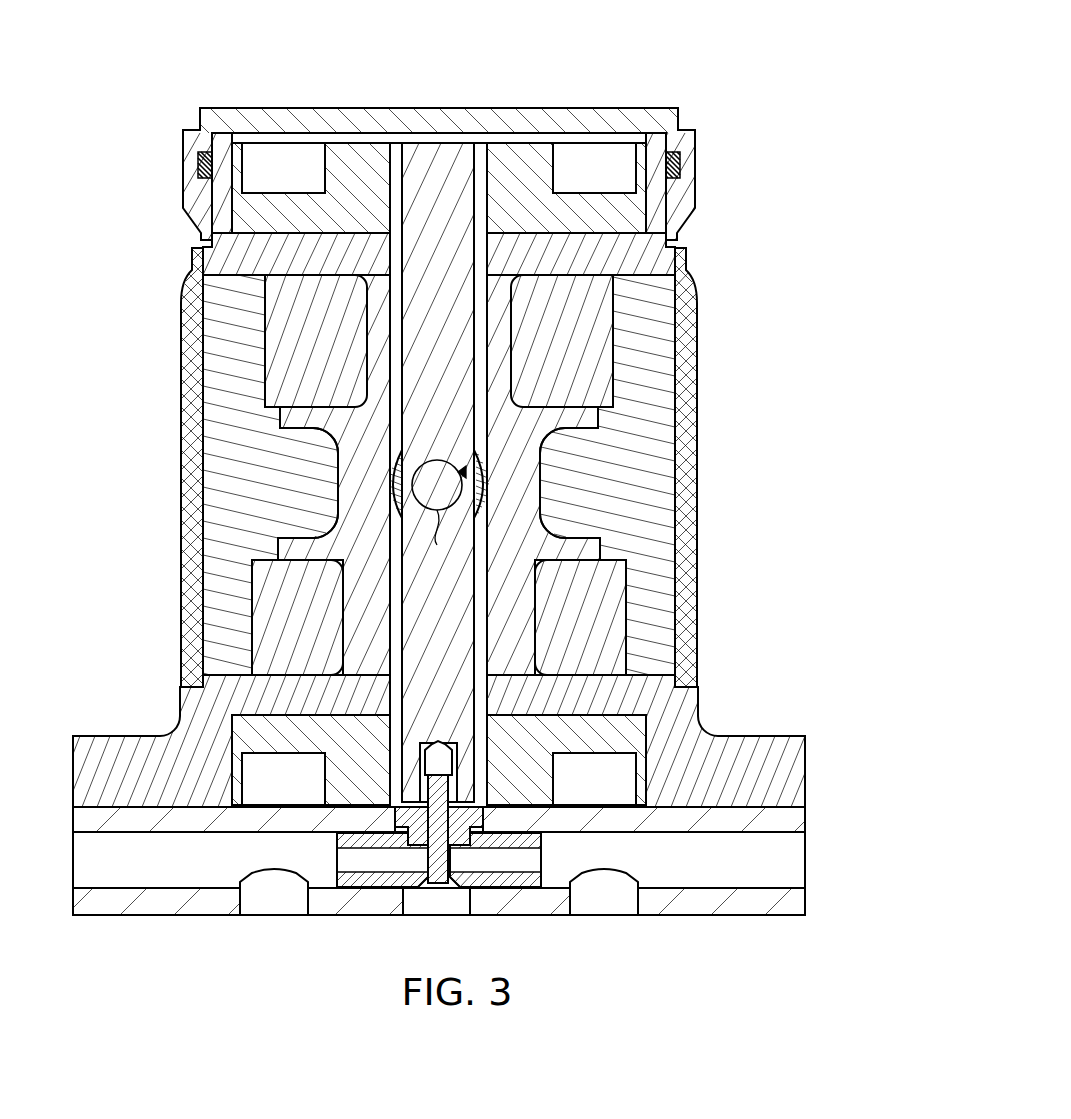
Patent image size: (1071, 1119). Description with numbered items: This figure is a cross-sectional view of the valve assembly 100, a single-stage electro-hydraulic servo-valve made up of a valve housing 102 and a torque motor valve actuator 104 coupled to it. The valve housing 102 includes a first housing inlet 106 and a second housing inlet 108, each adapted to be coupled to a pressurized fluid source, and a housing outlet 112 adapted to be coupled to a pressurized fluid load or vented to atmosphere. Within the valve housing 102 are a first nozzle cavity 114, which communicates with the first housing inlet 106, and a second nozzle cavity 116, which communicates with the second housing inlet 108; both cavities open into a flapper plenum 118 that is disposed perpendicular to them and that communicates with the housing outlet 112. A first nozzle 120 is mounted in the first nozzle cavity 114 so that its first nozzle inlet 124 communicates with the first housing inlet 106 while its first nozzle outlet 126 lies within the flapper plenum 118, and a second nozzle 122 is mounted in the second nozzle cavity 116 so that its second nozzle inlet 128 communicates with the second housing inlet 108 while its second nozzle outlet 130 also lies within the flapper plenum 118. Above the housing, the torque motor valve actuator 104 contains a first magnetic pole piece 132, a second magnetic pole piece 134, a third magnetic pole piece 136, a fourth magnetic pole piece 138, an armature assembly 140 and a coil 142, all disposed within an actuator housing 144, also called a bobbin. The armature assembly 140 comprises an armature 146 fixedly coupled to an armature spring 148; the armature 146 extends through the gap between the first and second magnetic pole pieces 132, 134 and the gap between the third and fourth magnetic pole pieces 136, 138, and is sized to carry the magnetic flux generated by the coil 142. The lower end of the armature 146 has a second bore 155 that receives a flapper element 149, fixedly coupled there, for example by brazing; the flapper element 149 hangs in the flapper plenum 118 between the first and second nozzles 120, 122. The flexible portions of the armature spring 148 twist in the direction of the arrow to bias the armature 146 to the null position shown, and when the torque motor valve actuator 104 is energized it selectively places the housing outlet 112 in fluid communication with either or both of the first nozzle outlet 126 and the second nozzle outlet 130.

The valve assembly 100 is at (740, 76).
The valve housing 102 is at (474, 819).
The torque motor valve actuator 104 is at (457, 457).
The first housing inlet 106 is at (273, 876).
The second housing inlet 108 is at (603, 876).
The housing outlet 112 is at (423, 908).
The first nozzle cavity 114 is at (170, 876).
The second nozzle cavity 116 is at (740, 876).
The flapper plenum 118 is at (450, 825).
The first nozzle 120 is at (337, 890).
The second nozzle 122 is at (542, 890).
The first nozzle inlet 124 is at (350, 862).
The first nozzle outlet 126 is at (425, 858).
The second nozzle inlet 128 is at (528, 862).
The second nozzle outlet 130 is at (452, 858).
The first magnetic pole piece 132 is at (240, 213).
The second magnetic pole piece 134 is at (635, 213).
The third magnetic pole piece 136 is at (248, 738).
The fourth magnetic pole piece 138 is at (630, 738).
The armature assembly 140 is at (439, 431).
The coil 142 is at (272, 385).
The actuator housing 144 is at (700, 210).
The armature 146 is at (400, 140).
The armature spring 148 is at (527, 443).
The flapper element 149 is at (440, 884).
The second bore 155 is at (450, 778).